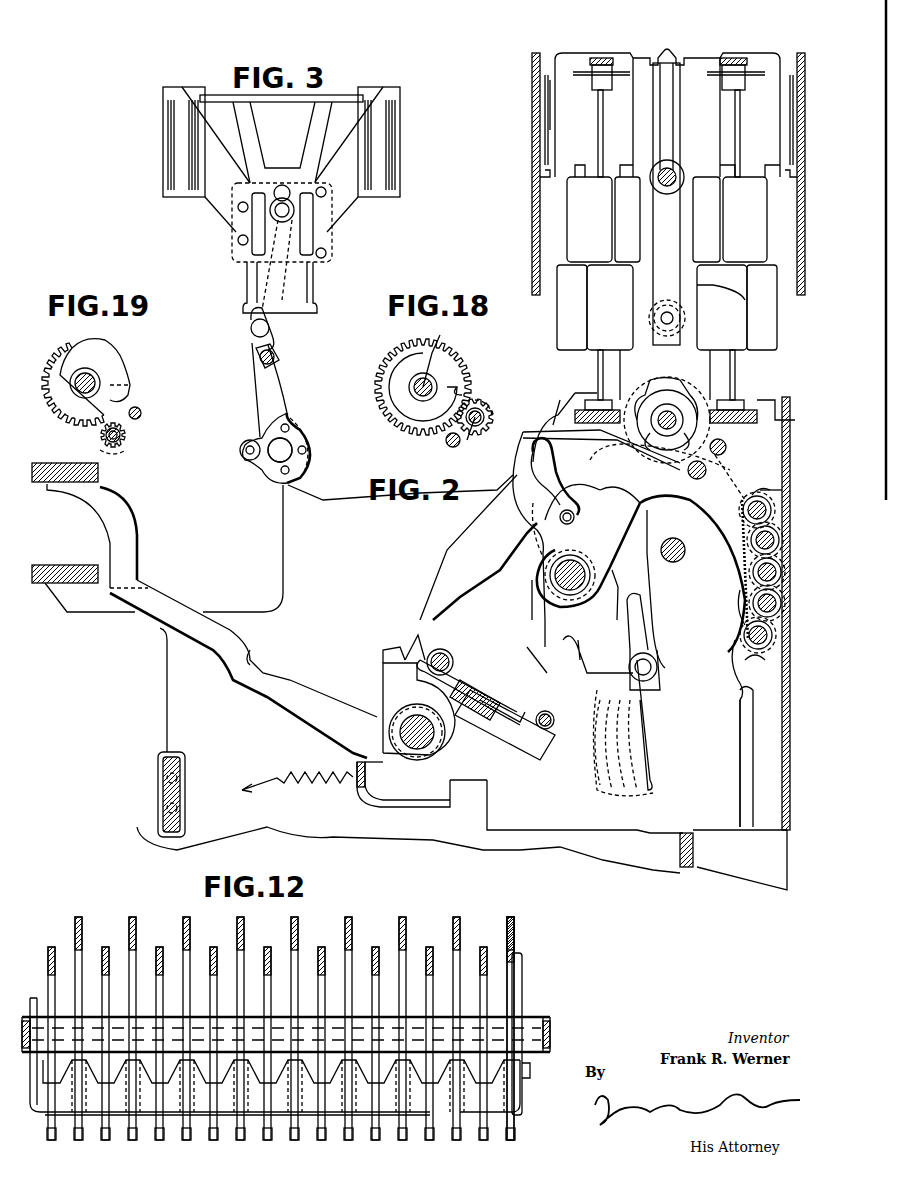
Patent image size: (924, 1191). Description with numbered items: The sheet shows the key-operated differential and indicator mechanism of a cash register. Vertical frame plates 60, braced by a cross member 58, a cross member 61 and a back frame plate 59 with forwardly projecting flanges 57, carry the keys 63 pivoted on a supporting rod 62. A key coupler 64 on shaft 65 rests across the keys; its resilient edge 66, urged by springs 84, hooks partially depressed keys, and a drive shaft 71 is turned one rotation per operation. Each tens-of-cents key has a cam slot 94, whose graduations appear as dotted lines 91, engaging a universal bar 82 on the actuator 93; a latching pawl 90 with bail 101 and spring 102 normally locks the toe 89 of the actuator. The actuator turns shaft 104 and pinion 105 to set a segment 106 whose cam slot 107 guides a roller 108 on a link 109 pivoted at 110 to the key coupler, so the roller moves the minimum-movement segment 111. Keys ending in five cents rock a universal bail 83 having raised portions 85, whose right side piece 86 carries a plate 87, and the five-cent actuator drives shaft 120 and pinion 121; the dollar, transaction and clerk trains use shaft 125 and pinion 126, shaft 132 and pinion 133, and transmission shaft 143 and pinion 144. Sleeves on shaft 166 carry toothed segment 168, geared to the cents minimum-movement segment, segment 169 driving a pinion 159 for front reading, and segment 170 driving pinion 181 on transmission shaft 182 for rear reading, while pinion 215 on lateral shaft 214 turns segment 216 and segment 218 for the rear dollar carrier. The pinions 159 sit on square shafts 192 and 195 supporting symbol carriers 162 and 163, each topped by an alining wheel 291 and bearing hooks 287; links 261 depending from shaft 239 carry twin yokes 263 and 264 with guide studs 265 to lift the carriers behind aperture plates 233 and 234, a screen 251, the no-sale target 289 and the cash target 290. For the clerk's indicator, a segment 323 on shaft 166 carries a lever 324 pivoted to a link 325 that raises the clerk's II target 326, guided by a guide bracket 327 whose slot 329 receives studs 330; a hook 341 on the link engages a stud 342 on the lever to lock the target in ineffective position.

In FIG. 3, the guide bracket 327 is at (252, 115).
In FIG. 3, the studs 330 is at (282, 183).
In FIG. 3, the clerk's II target 326 is at (345, 203).
In FIG. 2, the clerk's II target 326 is at (545, 90).
In FIG. 3, the link 325 is at (260, 282).
In FIG. 3, the slot 329 is at (295, 292).
In FIG. 3, the hook 341 is at (282, 337).
In FIG. 3, the stud 342 is at (256, 352).
In FIG. 3, the lever 324 is at (287, 392).
In FIG. 3, the shaft 166 is at (290, 415).
In FIG. 19, the shaft 166 is at (80, 378).
In FIG. 18, the shaft 166 is at (432, 380).
In FIG. 2, the shaft 166 is at (667, 412).
In FIG. 3, the segment 323 is at (318, 440).
In FIG. 19, the toothed segment 216 is at (85, 344).
In FIG. 19, the toothed segment 218 is at (136, 357).
In FIG. 19, the transmission shaft 182 is at (142, 390).
In FIG. 18, the transmission shaft 182 is at (468, 440).
In FIG. 2, the transmission shaft 182 is at (728, 455).
In FIG. 19, the pinion 215 is at (120, 432).
In FIG. 19, the shaft 214 is at (128, 445).
In FIG. 18, the shaft 214 is at (446, 440).
In FIG. 2, the shaft 214 is at (700, 480).
In FIG. 18, the toothed segment 168 is at (428, 370).
In FIG. 18, the toothed segment 169 is at (455, 350).
In FIG. 18, the toothed segment 170 is at (460, 392).
In FIG. 18, the pinion 181 is at (483, 403).
In FIG. 2, the screen 251 is at (540, 150).
In FIG. 2, the no sale target 289 is at (560, 53).
In FIG. 2, the alining wheel 291 is at (575, 78).
In FIG. 2, the aperture plate 233 is at (565, 130).
In FIG. 2, the aperture plate 234 is at (740, 115).
In FIG. 2, the hooks 287 is at (720, 165).
In FIG. 2, the shaft 239 is at (665, 160).
In FIG. 2, the cash target 290 is at (545, 172).
In FIG. 2, the symbol carrier 162 is at (560, 262).
In FIG. 2, the symbol carrier 163 is at (680, 280).
In FIG. 2, the guide stud 265 is at (660, 312).
In FIG. 2, the link 261 is at (721, 292).
In FIG. 2, the square shaft 192 is at (590, 360).
In FIG. 2, the yoke 263 is at (618, 373).
In FIG. 2, the yoke 264 is at (720, 365).
In FIG. 2, the square shaft 195 is at (740, 385).
In FIG. 2, the pinions 159 is at (585, 405).
In FIG. 2, the cam slot 107 is at (549, 455).
In FIG. 2, the segment 111 is at (515, 473).
In FIG. 2, the roller 108 is at (560, 510).
In FIG. 2, the actuator 93 is at (478, 540).
In FIG. 2, the segment 106 is at (648, 505).
In FIG. 2, the cross member 61 is at (575, 590).
In FIG. 2, the drive shaft 71 is at (685, 550).
In FIG. 2, the link 109 is at (532, 597).
In FIG. 2, the pivot 110 is at (597, 660).
In FIG. 2, the universal bar 82 is at (655, 665).
In FIG. 2, the cam slot 94 is at (645, 795).
In FIG. 2, the dotted lines 91 is at (597, 768).
In FIG. 2, the shaft 120 is at (773, 525).
In FIG. 2, the pinion 121 is at (780, 550).
In FIG. 2, the shaft 104 is at (752, 574).
In FIG. 2, the pinion 105 is at (780, 595).
In FIG. 2, the pinion 126 is at (775, 625).
In FIG. 2, the shaft 125 is at (752, 613).
In FIG. 2, the shaft 132 is at (745, 510).
In FIG. 2, the pinion 133 is at (770, 488).
In FIG. 2, the pinion 144 is at (738, 665).
In FIG. 2, the transmission shaft 143 is at (758, 660).
In FIG. 2, the flanges 57 is at (760, 697).
In FIG. 2, the back frame plate 59 is at (782, 735).
In FIG. 2, the frame plates 60 is at (283, 560).
In FIG. 2, the keys 63 is at (261, 651).
In FIG. 12, the keys 63 is at (300, 985).
In FIG. 2, the cross member 58 is at (158, 783).
In FIG. 2, the supporting rod 62 is at (435, 735).
In FIG. 12, the supporting rod 62 is at (545, 1030).
In FIG. 2, the latching pawl 90 is at (383, 655).
In FIG. 2, the toe 89 is at (415, 645).
In FIG. 2, the shaft 65 is at (450, 655).
In FIG. 2, the key coupler 64 is at (508, 745).
In FIG. 2, the resilient edge 66 is at (548, 728).
In FIG. 2, the springs 84 is at (515, 758).
In FIG. 12, the springs 84 is at (514, 932).
In FIG. 2, the raised portion 85 is at (357, 765).
In FIG. 12, the raised portion 85 is at (330, 1080).
In FIG. 2, the universal bail 83 is at (383, 810).
In FIG. 12, the universal bail 83 is at (495, 1112).
In FIG. 2, the bail 101 is at (367, 800).
In FIG. 2, the spring 102 is at (300, 790).
In FIG. 12, the plate 87 is at (522, 967).
In FIG. 12, the right side piece 86 is at (527, 1078).